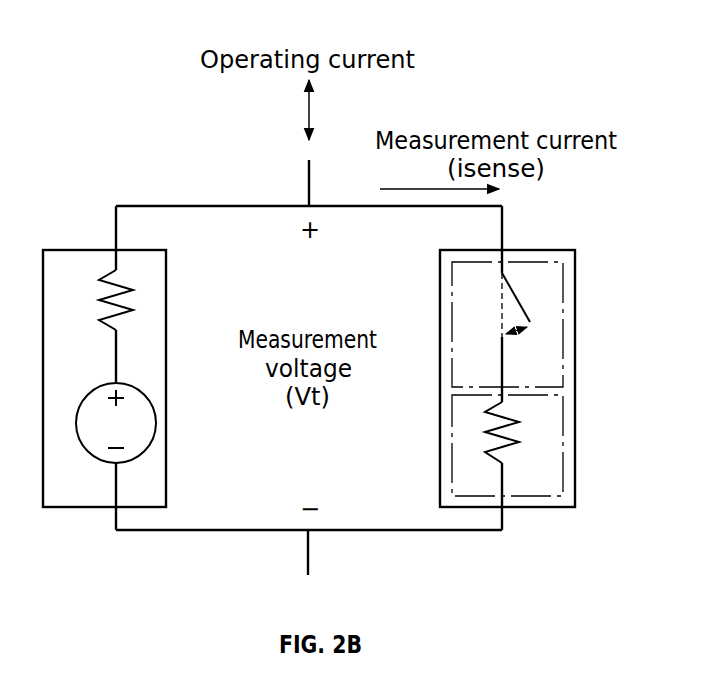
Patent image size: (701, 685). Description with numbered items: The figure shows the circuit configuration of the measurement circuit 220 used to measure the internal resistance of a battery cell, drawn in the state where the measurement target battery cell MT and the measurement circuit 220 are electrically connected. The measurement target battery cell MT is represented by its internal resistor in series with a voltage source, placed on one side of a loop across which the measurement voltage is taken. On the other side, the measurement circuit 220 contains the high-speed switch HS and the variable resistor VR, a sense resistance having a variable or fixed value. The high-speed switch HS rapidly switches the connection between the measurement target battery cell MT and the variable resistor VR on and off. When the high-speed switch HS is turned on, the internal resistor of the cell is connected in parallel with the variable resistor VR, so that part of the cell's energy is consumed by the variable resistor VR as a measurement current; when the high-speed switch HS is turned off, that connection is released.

The measurement circuit 220 is at (507, 421).
The measurement target battery cell MT is at (104, 378).
The high-speed switch HS is at (507, 324).
The variable resistor VR is at (507, 445).